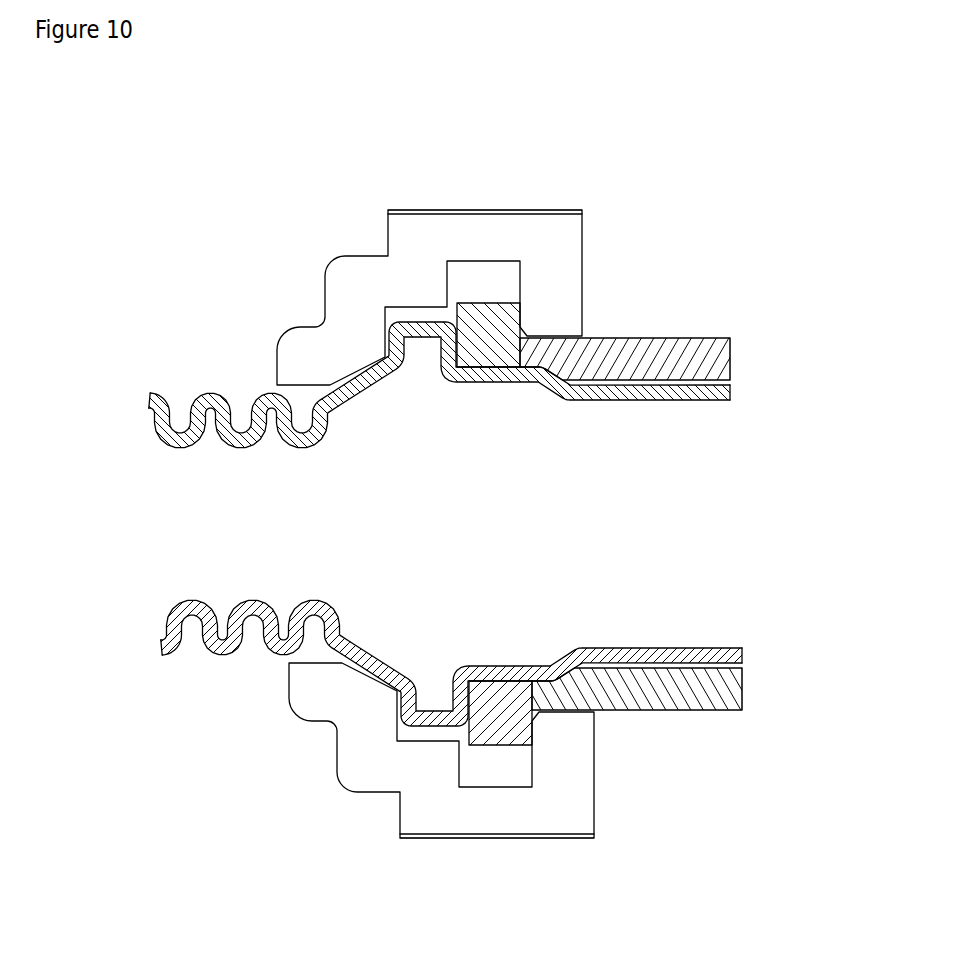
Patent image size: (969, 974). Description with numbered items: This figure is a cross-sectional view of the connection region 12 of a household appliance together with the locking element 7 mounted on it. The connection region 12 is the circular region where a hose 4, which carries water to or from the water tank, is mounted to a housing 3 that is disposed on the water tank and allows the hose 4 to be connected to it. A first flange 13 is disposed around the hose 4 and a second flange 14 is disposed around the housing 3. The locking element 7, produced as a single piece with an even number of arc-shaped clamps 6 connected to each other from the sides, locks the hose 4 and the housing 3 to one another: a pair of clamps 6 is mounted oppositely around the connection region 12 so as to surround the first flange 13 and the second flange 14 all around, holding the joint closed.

The housing 3 is at (650, 353).
The hose 4 is at (208, 407).
The clamp 6 is at (355, 293).
The locking element 7 is at (780, 382).
The connection region 12 is at (328, 168).
The first flange 13 is at (417, 338).
The second flange 14 is at (486, 327).